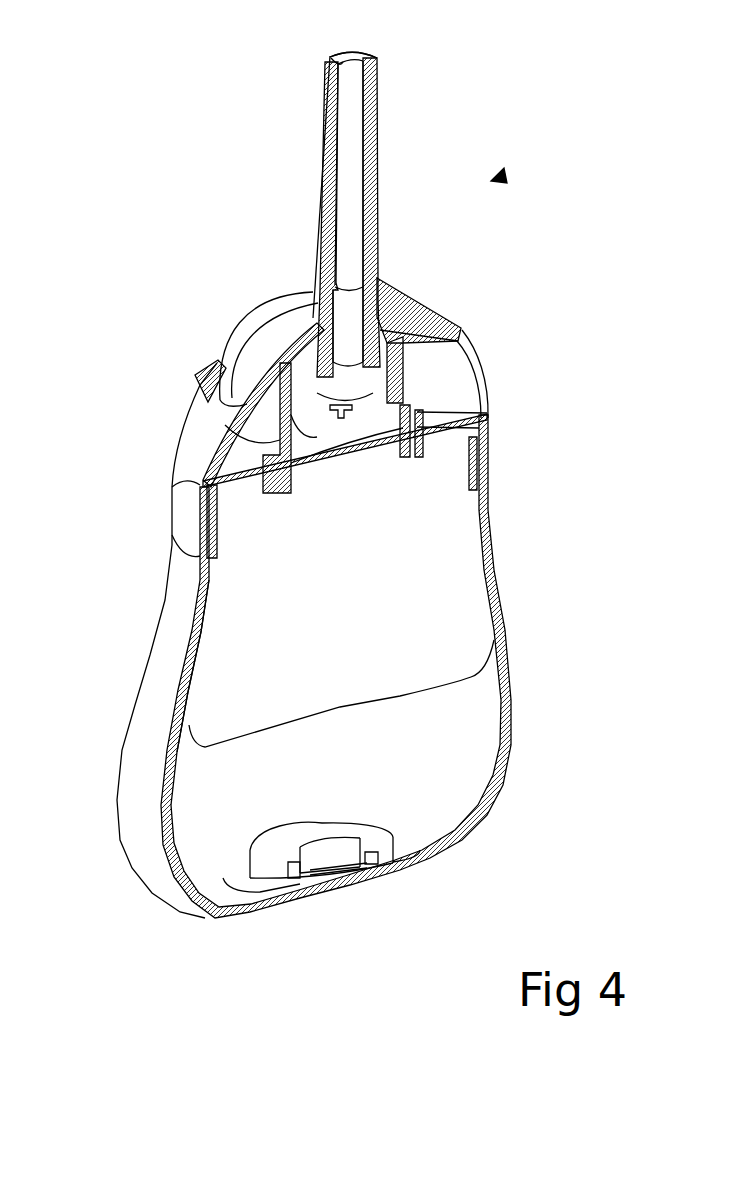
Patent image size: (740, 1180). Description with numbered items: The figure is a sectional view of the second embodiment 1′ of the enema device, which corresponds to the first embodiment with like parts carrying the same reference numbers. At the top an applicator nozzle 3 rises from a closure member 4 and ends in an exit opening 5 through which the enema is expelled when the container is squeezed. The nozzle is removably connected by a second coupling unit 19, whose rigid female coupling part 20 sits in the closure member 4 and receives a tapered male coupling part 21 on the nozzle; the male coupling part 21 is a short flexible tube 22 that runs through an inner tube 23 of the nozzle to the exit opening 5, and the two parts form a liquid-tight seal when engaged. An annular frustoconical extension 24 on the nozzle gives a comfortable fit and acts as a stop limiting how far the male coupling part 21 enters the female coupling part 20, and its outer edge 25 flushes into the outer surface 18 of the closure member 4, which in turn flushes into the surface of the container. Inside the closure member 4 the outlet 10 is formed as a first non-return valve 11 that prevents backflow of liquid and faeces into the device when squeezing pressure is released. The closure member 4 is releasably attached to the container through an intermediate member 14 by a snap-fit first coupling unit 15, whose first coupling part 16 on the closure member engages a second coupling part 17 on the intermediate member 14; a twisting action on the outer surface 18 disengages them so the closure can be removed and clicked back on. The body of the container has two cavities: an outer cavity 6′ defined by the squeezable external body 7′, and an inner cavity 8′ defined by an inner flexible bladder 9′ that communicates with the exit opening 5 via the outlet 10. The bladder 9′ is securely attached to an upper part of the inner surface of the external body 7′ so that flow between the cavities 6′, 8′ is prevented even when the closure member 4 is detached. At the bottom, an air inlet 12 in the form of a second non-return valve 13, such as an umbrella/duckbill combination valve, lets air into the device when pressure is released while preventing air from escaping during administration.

The second embodiment 1′ is at (506, 172).
The applicator nozzle 3 is at (378, 172).
The closure member 4 is at (484, 402).
The exit opening 5 is at (370, 53).
The outer cavity 6′ is at (460, 782).
The squeezable external body 7′ is at (157, 842).
The inner cavity 8′ is at (212, 683).
The inner flexible bladder 9′ is at (479, 677).
The outlet 10 is at (347, 415).
The first non-return valve 11 is at (305, 372).
The air inlet 12 is at (343, 880).
The second non-return valve 13 is at (320, 883).
The intermediate member 14 is at (489, 470).
The first coupling unit 15 is at (268, 495).
The first coupling part 16 is at (405, 457).
The second coupling part 17 is at (422, 455).
The outer surface 18 is at (192, 457).
The second coupling unit 19 is at (400, 372).
The female coupling part 20 is at (392, 333).
The male coupling part 21 is at (437, 313).
The short flexible tube 22 is at (363, 313).
The inner tube 23 is at (350, 230).
The frustoconical extension 24 is at (262, 333).
The outer edge 25 is at (216, 387).